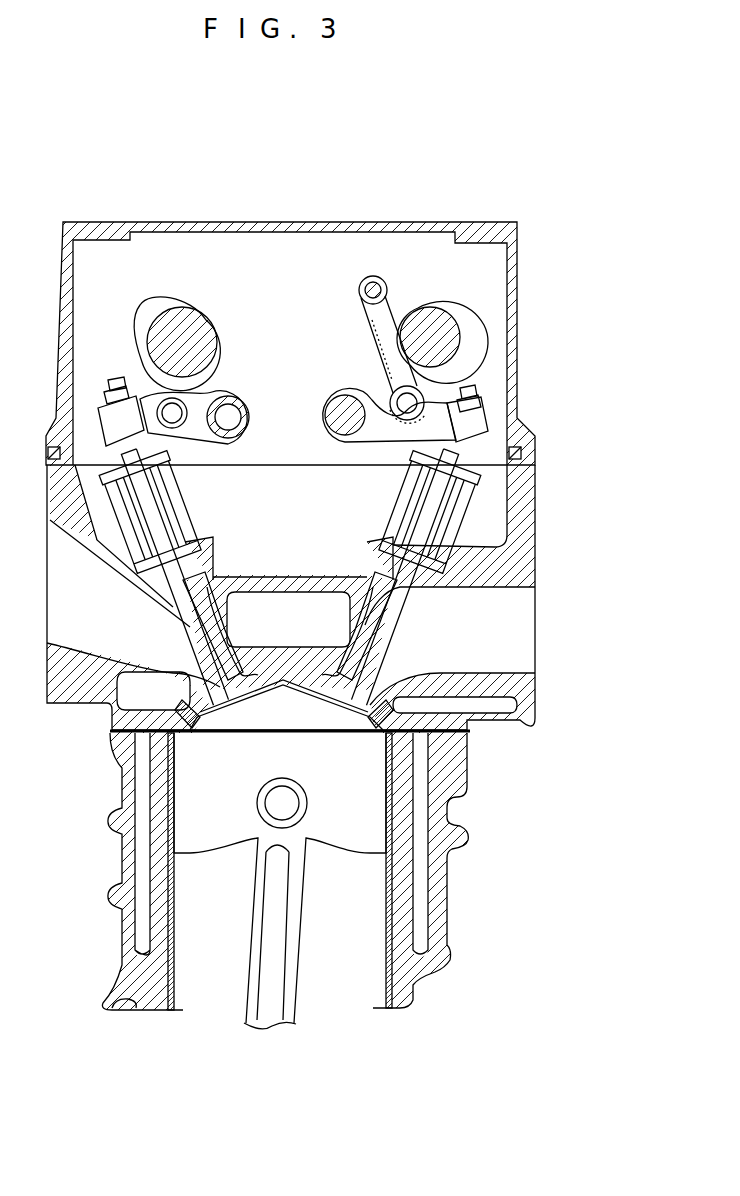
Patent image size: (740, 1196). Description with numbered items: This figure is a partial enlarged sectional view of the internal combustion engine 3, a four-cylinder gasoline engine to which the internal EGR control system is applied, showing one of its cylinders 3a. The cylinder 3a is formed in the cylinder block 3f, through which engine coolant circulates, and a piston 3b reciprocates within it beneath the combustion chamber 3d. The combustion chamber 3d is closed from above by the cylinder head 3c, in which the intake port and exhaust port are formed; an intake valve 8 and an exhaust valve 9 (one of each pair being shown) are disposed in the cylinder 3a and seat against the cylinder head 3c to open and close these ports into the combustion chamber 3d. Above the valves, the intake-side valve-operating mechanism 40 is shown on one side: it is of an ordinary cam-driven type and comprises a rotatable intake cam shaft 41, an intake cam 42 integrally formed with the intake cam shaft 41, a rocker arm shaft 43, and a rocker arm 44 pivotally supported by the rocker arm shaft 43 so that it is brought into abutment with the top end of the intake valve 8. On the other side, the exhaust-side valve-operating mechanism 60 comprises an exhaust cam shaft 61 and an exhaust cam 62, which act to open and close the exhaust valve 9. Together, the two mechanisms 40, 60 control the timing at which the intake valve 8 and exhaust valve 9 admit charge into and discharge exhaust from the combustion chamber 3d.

The internal combustion engine 3 is at (487, 219).
The cylinder 3a is at (175, 930).
The piston 3b is at (330, 843).
The cylinder head 3c is at (536, 507).
The combustion chamber 3d is at (254, 722).
The cylinder block 3f is at (437, 843).
The intake valve 8 is at (207, 657).
The exhaust valve 9 is at (370, 657).
The intake-side valve-operating mechanism 40 is at (154, 371).
The intake cam shaft 41 is at (197, 323).
The intake cam 42 is at (165, 296).
The rocker arm shaft 43 is at (240, 397).
The rocker arm 44 is at (190, 447).
The exhaust-side valve-operating mechanism 60 is at (437, 349).
The exhaust cam shaft 61 is at (423, 320).
The exhaust cam 62 is at (463, 317).